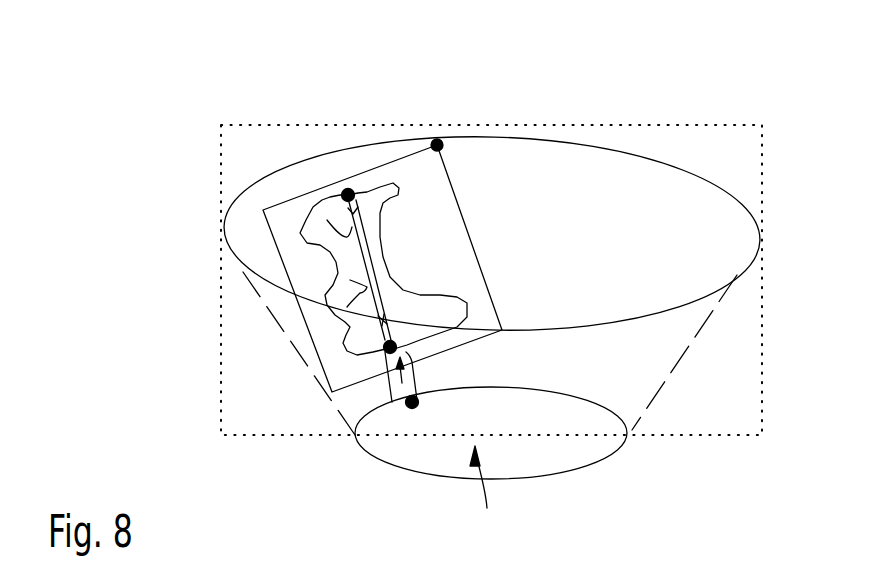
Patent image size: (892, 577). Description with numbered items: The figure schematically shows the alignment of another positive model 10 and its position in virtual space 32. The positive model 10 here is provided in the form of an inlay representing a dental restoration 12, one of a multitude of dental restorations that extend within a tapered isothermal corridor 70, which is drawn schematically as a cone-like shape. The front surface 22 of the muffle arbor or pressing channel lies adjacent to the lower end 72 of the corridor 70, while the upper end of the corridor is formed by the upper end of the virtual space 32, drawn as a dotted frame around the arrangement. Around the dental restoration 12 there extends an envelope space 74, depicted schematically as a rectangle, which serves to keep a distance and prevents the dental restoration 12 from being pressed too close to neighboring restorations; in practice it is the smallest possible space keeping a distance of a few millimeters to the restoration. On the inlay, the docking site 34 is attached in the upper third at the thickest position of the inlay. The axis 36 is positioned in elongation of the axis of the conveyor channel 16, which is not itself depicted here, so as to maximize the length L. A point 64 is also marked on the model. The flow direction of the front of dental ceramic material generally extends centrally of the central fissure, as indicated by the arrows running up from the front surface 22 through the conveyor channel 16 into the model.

The positive model 10 is at (300, 234).
The dental restoration 12 is at (368, 202).
The conveyor channel 16 is at (392, 390).
The front surface 22 is at (484, 495).
The virtual space 32 is at (738, 124).
The docking site 34 is at (357, 343).
The axis 36 is at (380, 263).
The upper reference point 64 is at (345, 189).
The isothermal corridor 70 is at (706, 329).
The lower end 72 is at (597, 448).
The envelope space 74 is at (452, 190).